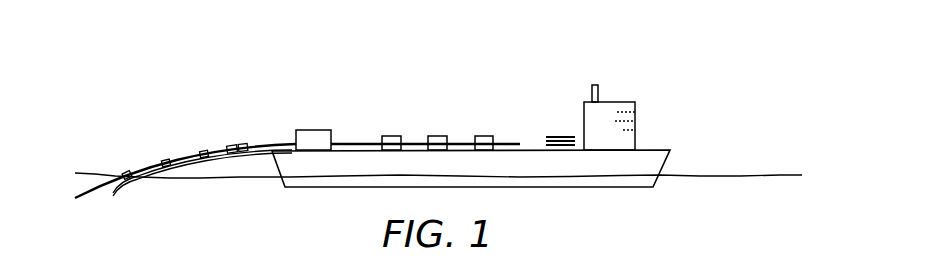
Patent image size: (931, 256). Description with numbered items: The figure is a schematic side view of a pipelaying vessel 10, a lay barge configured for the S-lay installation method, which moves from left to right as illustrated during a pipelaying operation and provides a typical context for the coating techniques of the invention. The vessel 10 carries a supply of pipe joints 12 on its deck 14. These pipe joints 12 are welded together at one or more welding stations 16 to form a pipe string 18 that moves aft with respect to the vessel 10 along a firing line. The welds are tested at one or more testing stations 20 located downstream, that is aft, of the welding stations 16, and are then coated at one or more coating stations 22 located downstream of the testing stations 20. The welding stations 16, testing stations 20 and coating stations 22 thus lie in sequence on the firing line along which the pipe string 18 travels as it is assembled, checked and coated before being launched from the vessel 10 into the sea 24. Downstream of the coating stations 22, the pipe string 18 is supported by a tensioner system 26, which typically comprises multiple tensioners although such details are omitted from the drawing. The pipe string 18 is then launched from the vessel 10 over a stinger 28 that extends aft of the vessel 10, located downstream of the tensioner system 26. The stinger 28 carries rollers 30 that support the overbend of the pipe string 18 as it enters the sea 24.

The pipelaying vessel 10 is at (629, 55).
The pipe joints 12 is at (561, 137).
The deck 14 is at (530, 150).
The welding stations 16 is at (486, 136).
The pipe string 18 is at (349, 143).
The testing stations 20 is at (438, 136).
The coating stations 22 is at (392, 136).
The sea 24 is at (725, 175).
The tensioner system 26 is at (313, 130).
The stinger 28 is at (230, 147).
The rollers 30 is at (160, 161).